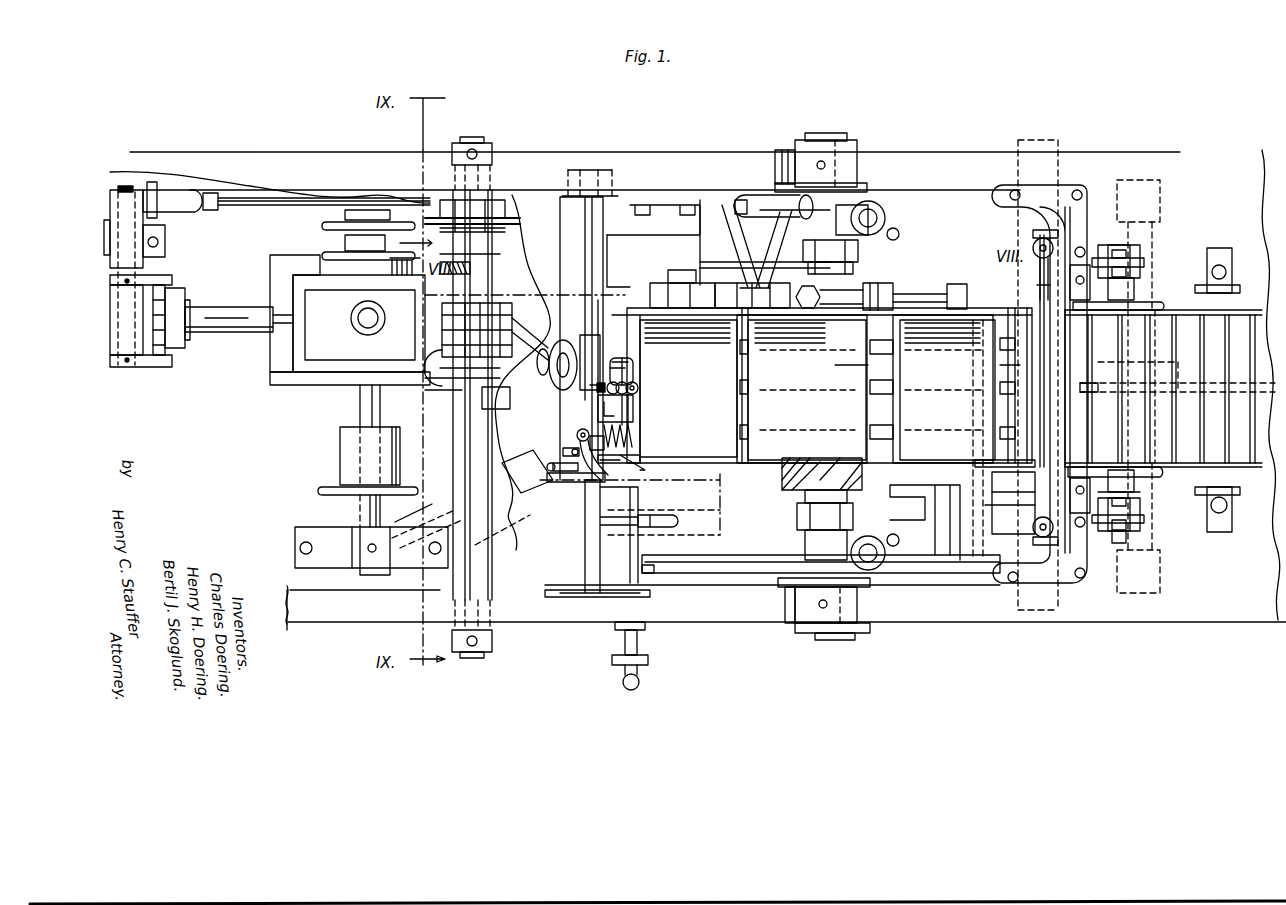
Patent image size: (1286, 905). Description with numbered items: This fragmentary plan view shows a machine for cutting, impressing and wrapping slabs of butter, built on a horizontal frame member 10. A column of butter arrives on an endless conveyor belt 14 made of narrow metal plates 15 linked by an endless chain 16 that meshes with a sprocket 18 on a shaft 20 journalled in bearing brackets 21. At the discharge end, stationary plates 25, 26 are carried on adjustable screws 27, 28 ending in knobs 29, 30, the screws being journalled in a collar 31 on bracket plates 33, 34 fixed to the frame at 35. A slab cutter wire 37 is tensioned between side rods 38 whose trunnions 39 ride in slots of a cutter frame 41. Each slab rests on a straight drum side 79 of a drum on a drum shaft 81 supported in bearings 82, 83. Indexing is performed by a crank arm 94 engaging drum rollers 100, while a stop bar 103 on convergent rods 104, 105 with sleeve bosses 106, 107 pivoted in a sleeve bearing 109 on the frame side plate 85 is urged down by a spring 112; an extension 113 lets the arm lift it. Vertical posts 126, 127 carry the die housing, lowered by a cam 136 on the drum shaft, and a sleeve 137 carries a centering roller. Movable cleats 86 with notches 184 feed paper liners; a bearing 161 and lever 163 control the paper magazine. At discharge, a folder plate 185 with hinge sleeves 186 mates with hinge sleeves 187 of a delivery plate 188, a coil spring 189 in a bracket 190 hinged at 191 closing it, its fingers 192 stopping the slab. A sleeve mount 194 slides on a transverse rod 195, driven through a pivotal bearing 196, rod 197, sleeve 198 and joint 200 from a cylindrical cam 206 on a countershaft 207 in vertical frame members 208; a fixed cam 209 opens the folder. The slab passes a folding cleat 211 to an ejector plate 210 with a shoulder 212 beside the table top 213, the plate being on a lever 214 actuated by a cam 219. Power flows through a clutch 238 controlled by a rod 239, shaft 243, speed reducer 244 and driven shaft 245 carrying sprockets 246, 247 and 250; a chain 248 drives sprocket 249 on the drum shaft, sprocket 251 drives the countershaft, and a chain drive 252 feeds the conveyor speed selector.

The horizontal frame member 10 is at (340, 616).
The endless conveyor belt 14 is at (1240, 335).
The rectangular metal plates 15 is at (1240, 432).
The endless chain 16 is at (1256, 428).
The sprocket 18 is at (1137, 382).
The shaft 20 is at (1135, 488).
The bearing brackets 21 is at (1158, 195).
The horizontally extending plate 25 is at (1142, 300).
The horizontally extending plate 26 is at (1140, 500).
The adjustable screw 27 is at (1140, 284).
The adjustable screw 28 is at (1140, 512).
The manual manipulating knob 29 is at (1138, 268).
The manual manipulating knob 30 is at (1118, 543).
The collar 31 is at (1090, 389).
The upstanding bracket plate 33 is at (1138, 252).
The upstanding bracket plate 34 is at (1142, 530).
The fixing point of bracket plates 35 is at (1116, 248).
The slab cutter wire 37 is at (1016, 375).
The cutter side rods 38 is at (1050, 250).
The trunnions 39 is at (1010, 514).
The cutter frame 41 is at (1038, 256).
The straight drum side 79 is at (830, 420).
The drum shaft 81 is at (824, 133).
The bearing 82 is at (856, 608).
The bearing 83 is at (855, 163).
The frame side plate 85 is at (706, 200).
The movable cleats 86 is at (868, 374).
The sectional crank arm 94 is at (866, 292).
The drum rollers 100 is at (896, 298).
The stop bar 103 is at (770, 305).
The convergent rod 104 is at (739, 246).
The convergent rod 105 is at (818, 213).
The sleeve boss 106 is at (720, 205).
The sleeve boss 107 is at (790, 200).
The sleeve bearing 109 is at (752, 203).
The spring 112 is at (765, 254).
The extension 113 is at (728, 296).
The vertical post 126 is at (872, 210).
The vertical post 127 is at (876, 565).
The cam 136 is at (888, 218).
The sleeve 137 is at (898, 545).
The bearing 161 is at (615, 638).
The lever 163 is at (612, 659).
The notches 184 is at (925, 352).
The folder and hold-down plate 185 is at (630, 420).
The hinge sleeves 186 is at (632, 388).
The hinge sleeves 187 is at (638, 396).
The delivery plate 188 is at (636, 416).
The coil spring 189 is at (598, 388).
The bracket 190 is at (620, 390).
The hinge 191 is at (618, 386).
The fingers 192 is at (625, 450).
The sleeve mount 194 is at (585, 340).
The transverse rod 195 is at (598, 284).
The pivotal bearing 196 is at (549, 365).
The elongated rod 197 is at (538, 362).
The sleeve 198 is at (505, 397).
The joint 200 is at (508, 328).
The cylindrical cam 206 is at (440, 396).
The countershaft 207 is at (456, 414).
The vertical frame members 208 is at (492, 160).
The fixed cam 209 is at (625, 263).
The ejector plate 210 is at (642, 556).
The folding anvil or cleat 211 is at (638, 476).
The shoulder 212 is at (616, 596).
The table top 213 is at (540, 222).
The lever 214 is at (676, 522).
The cam 219 is at (461, 526).
The clutch 238 is at (137, 300).
The rod 239 is at (257, 202).
The shaft 243 is at (222, 316).
The speed reducer 244 is at (335, 338).
The driven shaft 245 is at (368, 405).
The sprocket 246 is at (325, 492).
The sprocket 247 is at (339, 225).
The chain 248 is at (574, 497).
The sprocket 249 is at (782, 490).
The sprocket 250 is at (340, 254).
The sprocket 251 is at (452, 237).
The chain drive 252 is at (440, 214).